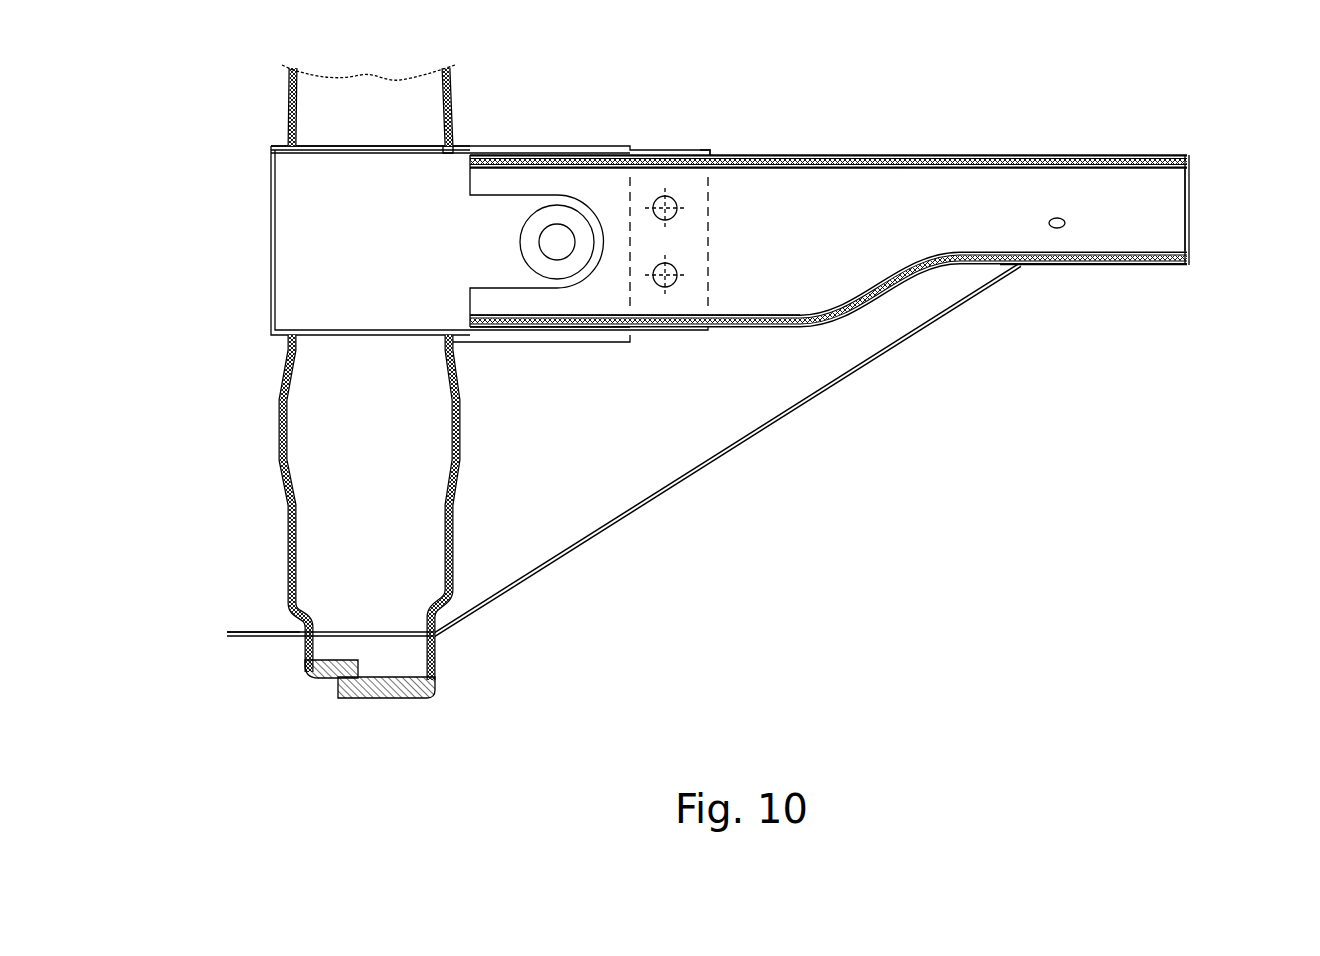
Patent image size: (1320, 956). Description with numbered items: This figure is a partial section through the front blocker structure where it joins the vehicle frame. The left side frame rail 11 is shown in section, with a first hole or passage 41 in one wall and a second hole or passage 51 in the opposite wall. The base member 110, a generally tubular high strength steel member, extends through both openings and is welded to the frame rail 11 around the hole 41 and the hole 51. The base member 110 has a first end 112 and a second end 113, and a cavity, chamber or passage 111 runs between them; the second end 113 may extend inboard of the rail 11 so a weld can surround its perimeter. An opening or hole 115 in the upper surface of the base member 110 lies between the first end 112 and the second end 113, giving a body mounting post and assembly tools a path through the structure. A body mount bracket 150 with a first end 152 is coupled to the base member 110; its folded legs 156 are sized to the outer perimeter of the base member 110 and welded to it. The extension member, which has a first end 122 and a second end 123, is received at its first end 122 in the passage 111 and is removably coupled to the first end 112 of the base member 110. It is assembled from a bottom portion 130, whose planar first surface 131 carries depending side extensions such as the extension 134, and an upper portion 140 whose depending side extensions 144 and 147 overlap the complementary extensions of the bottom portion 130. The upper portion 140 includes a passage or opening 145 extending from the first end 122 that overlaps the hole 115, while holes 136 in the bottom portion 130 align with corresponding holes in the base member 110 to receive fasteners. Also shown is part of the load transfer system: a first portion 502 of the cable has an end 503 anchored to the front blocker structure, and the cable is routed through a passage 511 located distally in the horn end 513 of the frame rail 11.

The left side frame rail 11 is at (369, 367).
The first hole or passage 41 is at (452, 153).
The second hole or passage 51 is at (296, 334).
The base member 110 is at (843, 236).
The cavity, chamber or passage 111 is at (325, 223).
The first end 112 is at (712, 154).
The second end 113 is at (271, 150).
The hole or passage 115 is at (538, 229).
The first end 122 is at (485, 180).
The second end 123 is at (1190, 203).
The bottom portion 130 is at (1082, 252).
The first surface 131 is at (1075, 182).
The depending side extension 134 is at (955, 170).
The holes 136 is at (678, 207).
The upper portion 140 is at (882, 155).
The depending side extension 144 is at (985, 154).
The passage or opening 145 is at (490, 290).
The depending side extension 147 is at (1045, 268).
The body mount bracket 150 is at (540, 342).
The first end 152 is at (636, 148).
The legs 156 is at (578, 144).
The first portion 502 is at (650, 505).
The end 503 is at (1048, 236).
The passage 511 is at (455, 652).
The horn end 513 is at (250, 522).